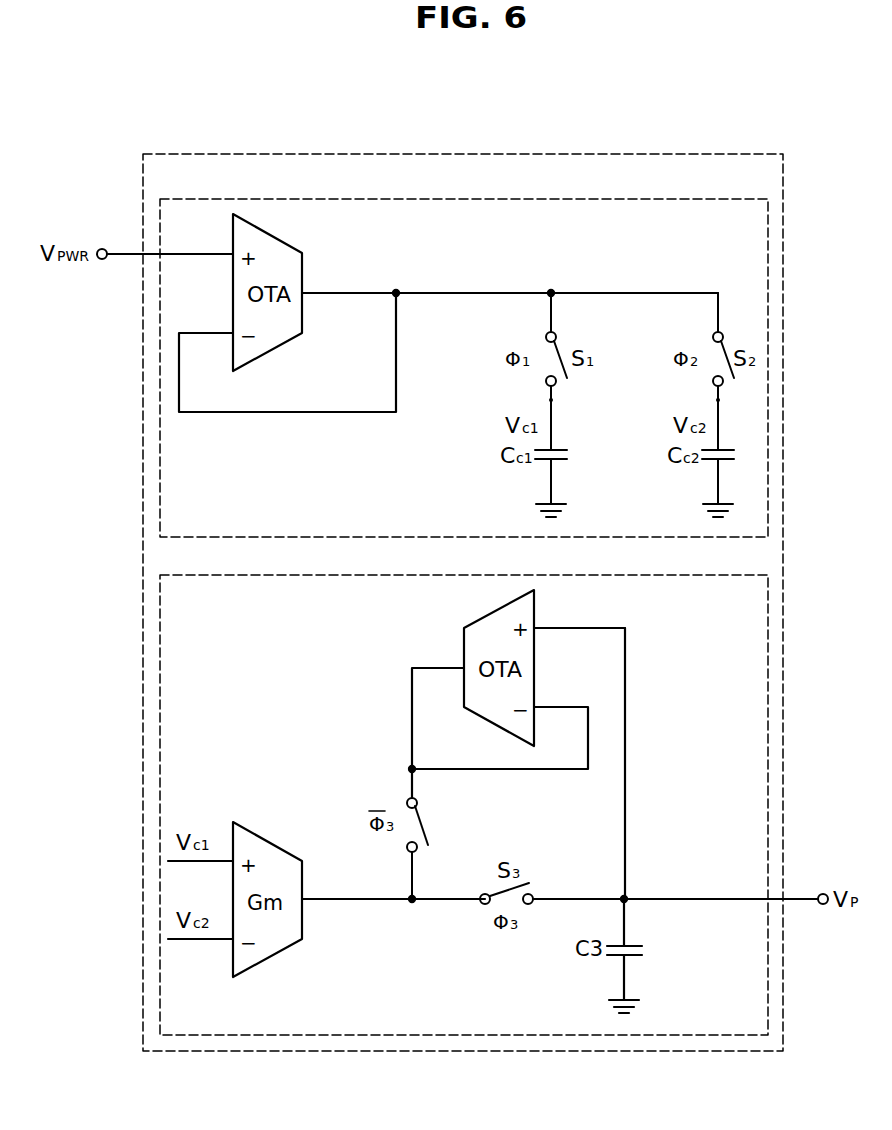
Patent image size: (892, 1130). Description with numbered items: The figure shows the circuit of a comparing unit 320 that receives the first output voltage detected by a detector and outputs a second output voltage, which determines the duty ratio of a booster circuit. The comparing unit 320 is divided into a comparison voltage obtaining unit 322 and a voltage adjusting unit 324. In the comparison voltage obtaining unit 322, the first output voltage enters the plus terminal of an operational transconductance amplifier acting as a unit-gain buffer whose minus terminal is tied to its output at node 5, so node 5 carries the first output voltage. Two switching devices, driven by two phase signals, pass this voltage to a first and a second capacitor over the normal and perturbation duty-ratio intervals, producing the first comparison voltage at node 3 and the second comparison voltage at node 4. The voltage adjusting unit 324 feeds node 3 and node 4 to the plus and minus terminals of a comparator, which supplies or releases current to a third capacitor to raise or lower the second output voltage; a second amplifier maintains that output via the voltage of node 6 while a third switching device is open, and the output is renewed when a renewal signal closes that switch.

The comparing unit 320 is at (627, 154).
The comparison voltage obtaining unit 322 is at (627, 199).
The voltage adjusting unit 324 is at (627, 575).
The node ③ 3 is at (537, 399).
The node ④ 4 is at (705, 399).
The node ⑤ 5 is at (396, 282).
The node ⑥ 6 is at (413, 912).